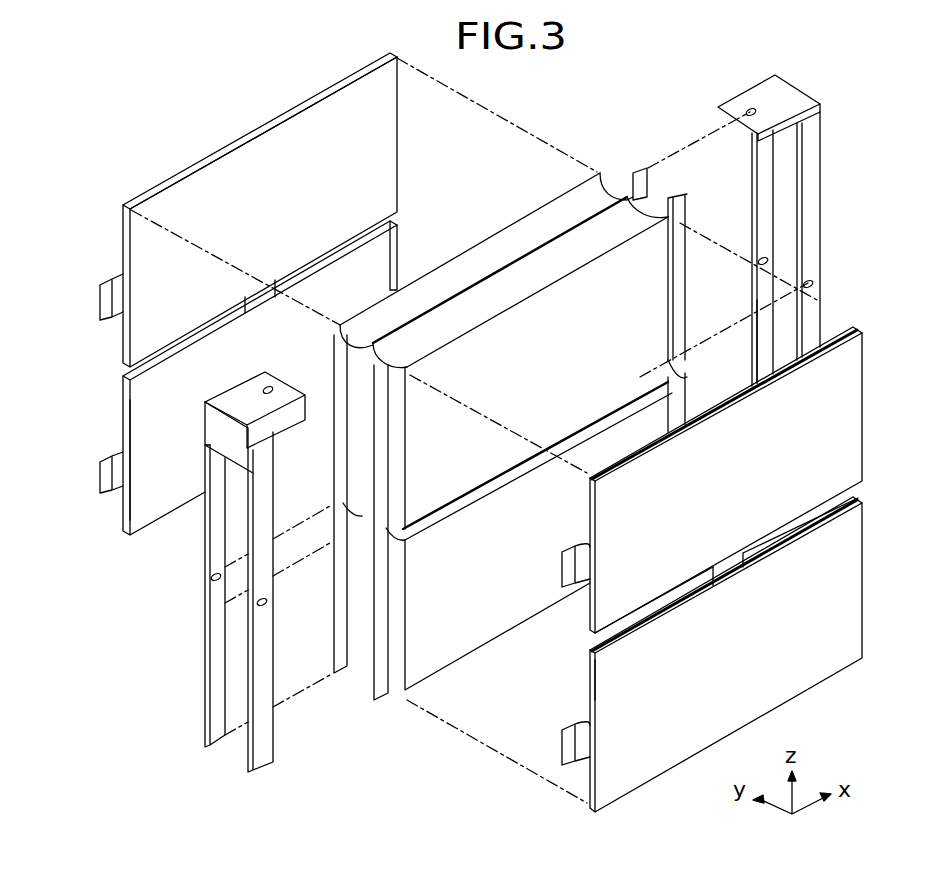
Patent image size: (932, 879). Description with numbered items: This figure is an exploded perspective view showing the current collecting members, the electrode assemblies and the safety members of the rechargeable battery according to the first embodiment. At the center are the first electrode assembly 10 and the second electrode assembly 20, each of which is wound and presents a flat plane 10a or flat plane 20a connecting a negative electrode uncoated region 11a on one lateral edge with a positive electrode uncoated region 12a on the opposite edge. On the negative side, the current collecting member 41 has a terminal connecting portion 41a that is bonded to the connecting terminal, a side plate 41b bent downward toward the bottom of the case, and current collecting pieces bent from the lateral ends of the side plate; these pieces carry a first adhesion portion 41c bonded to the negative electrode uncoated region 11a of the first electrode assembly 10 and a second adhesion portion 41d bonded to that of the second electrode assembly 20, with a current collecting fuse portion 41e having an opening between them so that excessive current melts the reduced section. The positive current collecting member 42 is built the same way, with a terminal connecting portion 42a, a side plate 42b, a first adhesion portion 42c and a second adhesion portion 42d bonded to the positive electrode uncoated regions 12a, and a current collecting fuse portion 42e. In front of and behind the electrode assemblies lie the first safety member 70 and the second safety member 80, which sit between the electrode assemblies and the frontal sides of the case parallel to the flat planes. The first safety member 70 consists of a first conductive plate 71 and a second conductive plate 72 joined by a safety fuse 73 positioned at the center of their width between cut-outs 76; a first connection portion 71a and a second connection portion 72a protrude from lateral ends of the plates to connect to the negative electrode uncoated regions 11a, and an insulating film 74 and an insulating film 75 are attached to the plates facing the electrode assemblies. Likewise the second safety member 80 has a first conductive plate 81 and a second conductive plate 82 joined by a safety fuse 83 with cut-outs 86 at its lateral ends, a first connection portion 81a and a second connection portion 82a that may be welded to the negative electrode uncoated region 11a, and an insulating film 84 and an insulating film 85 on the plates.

The first electrode assembly 10 is at (505, 306).
The flat plane 10a is at (508, 343).
The negative electrode uncoated region 11a is at (345, 470).
The positive electrode uncoated region 12a is at (634, 172).
The second electrode assembly 20 is at (507, 567).
The flat plane 20a is at (487, 622).
The current collecting member 41 is at (181, 548).
The terminal connecting portion 41a is at (252, 388).
The side plate 41b is at (227, 436).
The first adhesion portion 41c is at (258, 547).
The second adhesion portion 41d is at (260, 697).
The current collecting fuse portion 41e is at (257, 602).
The current collecting member 42 is at (808, 209).
The terminal connecting portion 42a is at (767, 90).
The side plate 42b is at (822, 113).
The first adhesion portion 42c is at (766, 207).
The second adhesion portion 42d is at (764, 341).
The current collecting fuse portion 42e is at (814, 284).
The first safety member 70 is at (234, 206).
The first conductive plate 71 is at (280, 114).
The first connection portion 71a is at (100, 285).
The second conductive plate 72 is at (241, 345).
The second connection portion 72a is at (100, 475).
The safety fuse 73 is at (262, 296).
The insulating film 74 is at (195, 195).
The insulating film 75 is at (140, 412).
The cut-outs 76 is at (368, 237).
The second safety member 80 is at (697, 569).
The first conductive plate 81 is at (708, 495).
The first connection portion 81a is at (569, 572).
The second conductive plate 82 is at (697, 631).
The second connection portion 82a is at (563, 749).
The safety fuse 83 is at (723, 568).
The insulating film 84 is at (591, 618).
The insulating film 85 is at (590, 697).
The cut-outs 86 is at (853, 503).